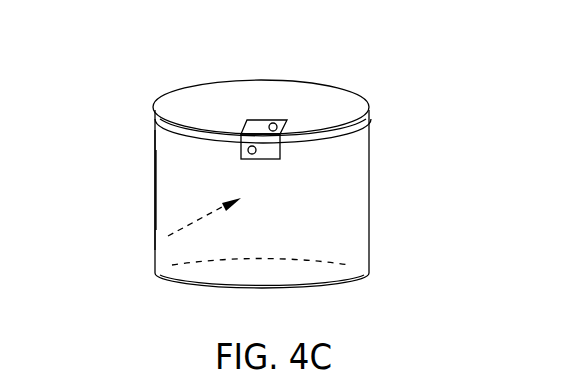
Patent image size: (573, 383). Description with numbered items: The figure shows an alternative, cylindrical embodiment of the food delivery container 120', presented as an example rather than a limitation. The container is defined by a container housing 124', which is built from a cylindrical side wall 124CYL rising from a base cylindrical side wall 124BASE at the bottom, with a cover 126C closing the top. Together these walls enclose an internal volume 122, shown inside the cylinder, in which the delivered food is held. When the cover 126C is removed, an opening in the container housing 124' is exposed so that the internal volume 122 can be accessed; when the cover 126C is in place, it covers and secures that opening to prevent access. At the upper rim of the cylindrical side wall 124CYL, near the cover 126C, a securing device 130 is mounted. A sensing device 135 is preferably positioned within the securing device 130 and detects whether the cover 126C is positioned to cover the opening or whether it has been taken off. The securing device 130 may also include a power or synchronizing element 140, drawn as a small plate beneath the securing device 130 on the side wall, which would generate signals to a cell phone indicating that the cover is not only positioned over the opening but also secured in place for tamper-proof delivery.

The food delivery container 120' is at (295, 184).
The internal volume 122 is at (163, 237).
The container housing 124' is at (118, 190).
The cylindrical side wall 124CYL is at (156, 158).
The base cylindrical side wall 124BASE is at (330, 282).
The cover 126C is at (367, 134).
The securing device 130 is at (258, 104).
The sensing device 135 is at (283, 118).
The power or synchronizing element 140 is at (247, 147).